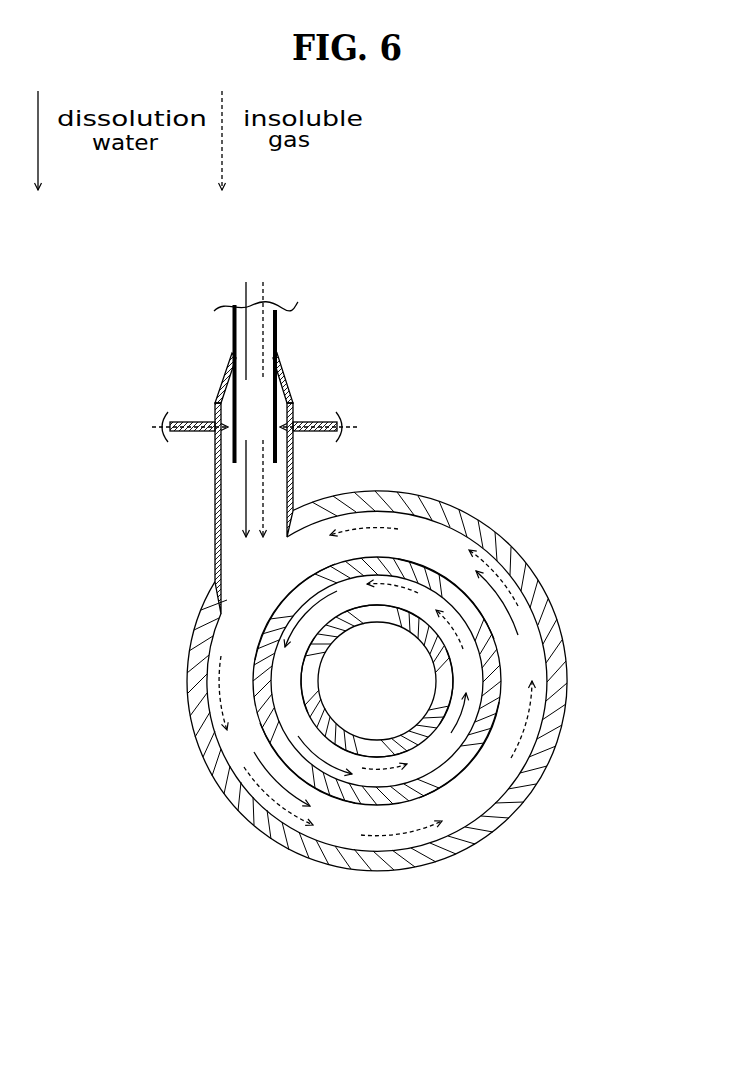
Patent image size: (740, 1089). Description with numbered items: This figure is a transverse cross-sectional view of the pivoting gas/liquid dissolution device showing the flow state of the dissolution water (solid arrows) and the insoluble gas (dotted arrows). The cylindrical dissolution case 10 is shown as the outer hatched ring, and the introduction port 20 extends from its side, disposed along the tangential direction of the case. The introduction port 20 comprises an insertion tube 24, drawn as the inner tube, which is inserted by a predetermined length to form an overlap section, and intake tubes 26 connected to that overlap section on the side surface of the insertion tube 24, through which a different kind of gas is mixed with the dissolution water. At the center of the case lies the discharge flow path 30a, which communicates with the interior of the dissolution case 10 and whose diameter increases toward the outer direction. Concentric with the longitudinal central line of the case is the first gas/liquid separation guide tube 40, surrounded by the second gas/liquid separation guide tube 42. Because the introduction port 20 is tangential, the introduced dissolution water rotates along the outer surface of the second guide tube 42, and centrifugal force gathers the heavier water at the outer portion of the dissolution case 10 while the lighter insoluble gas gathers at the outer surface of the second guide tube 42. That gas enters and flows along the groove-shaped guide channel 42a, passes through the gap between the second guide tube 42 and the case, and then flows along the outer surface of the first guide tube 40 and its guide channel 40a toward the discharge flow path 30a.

The dissolution case 10 is at (358, 870).
The introduction port 20 is at (372, 449).
The insertion tube 24 is at (278, 322).
The intake tubes 26 is at (300, 423).
The discharge flow path 30a is at (343, 673).
The first gas/liquid separation guide tube 40 is at (445, 640).
The guide channel 40a is at (462, 668).
The second gas/liquid separation guide tube 42 is at (420, 566).
The guide channel 42a is at (455, 578).